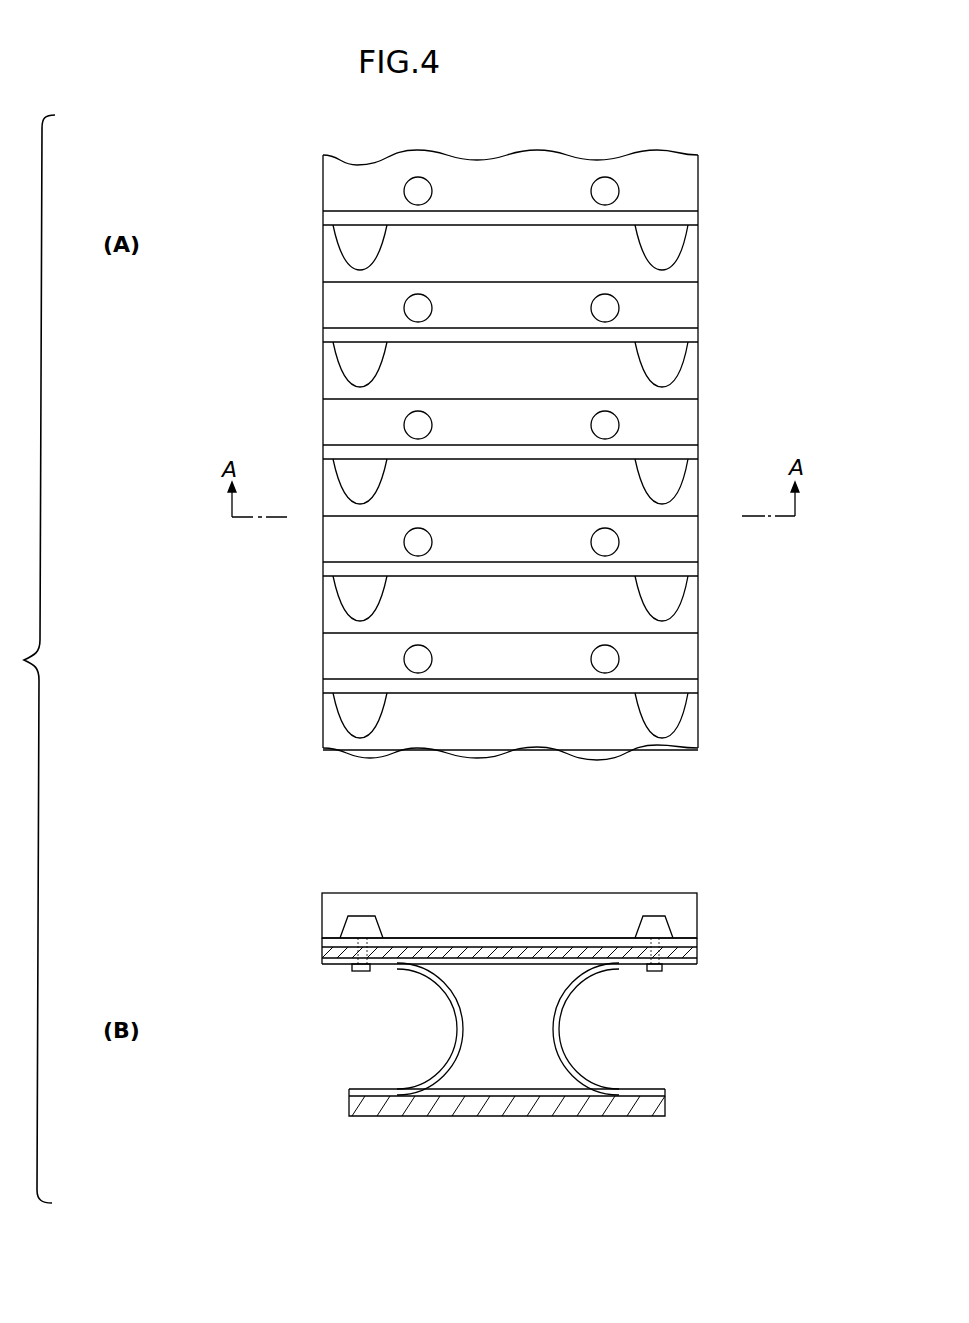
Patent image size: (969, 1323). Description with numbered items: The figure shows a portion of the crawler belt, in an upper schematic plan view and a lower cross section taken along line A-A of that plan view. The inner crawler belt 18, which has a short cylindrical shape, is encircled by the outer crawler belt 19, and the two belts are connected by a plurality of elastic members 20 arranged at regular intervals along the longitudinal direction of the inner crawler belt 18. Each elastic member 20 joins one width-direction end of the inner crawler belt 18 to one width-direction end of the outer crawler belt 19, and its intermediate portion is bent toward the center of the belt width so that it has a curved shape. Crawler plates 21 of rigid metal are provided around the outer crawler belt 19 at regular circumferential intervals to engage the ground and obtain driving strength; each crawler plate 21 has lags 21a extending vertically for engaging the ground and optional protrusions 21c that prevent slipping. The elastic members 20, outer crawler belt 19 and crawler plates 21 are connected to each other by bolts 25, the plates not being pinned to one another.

The inner crawler belt 18 is at (593, 1116).
The outer crawler belt 19 is at (699, 307).
The elastic member 20 is at (577, 1070).
The crawler plate 21 is at (687, 374).
The lag 21a is at (699, 337).
The protrusion 21c is at (672, 613).
The bolt 25 is at (655, 971).